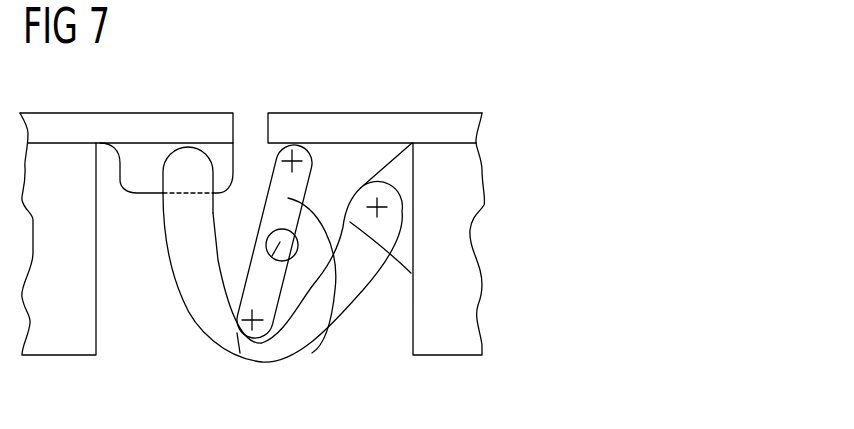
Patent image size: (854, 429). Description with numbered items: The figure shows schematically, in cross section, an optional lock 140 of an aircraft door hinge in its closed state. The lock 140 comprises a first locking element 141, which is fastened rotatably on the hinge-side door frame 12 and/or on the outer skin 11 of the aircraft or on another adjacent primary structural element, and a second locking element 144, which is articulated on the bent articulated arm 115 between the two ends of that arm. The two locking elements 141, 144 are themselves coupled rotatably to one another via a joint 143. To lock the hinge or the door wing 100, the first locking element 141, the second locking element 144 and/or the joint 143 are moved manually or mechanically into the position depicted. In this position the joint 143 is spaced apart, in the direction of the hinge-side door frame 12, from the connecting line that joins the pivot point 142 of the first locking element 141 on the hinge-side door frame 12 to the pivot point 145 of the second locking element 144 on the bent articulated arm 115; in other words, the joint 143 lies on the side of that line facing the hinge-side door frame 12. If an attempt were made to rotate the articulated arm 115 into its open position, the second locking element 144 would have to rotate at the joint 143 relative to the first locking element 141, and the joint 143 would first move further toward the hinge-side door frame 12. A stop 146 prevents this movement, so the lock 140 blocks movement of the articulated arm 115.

The door wing 100 is at (138, 126).
The outer skin 11 is at (370, 126).
The hinge-side door frame 12 is at (466, 235).
The bent articulated arm 115 is at (320, 328).
The lock 140 is at (262, 166).
The first locking element 141 is at (322, 322).
The pivot point 142 is at (302, 142).
The joint 143 is at (280, 262).
The second locking element 144 is at (262, 282).
The pivot point 145 is at (237, 333).
The stop 146 is at (312, 353).